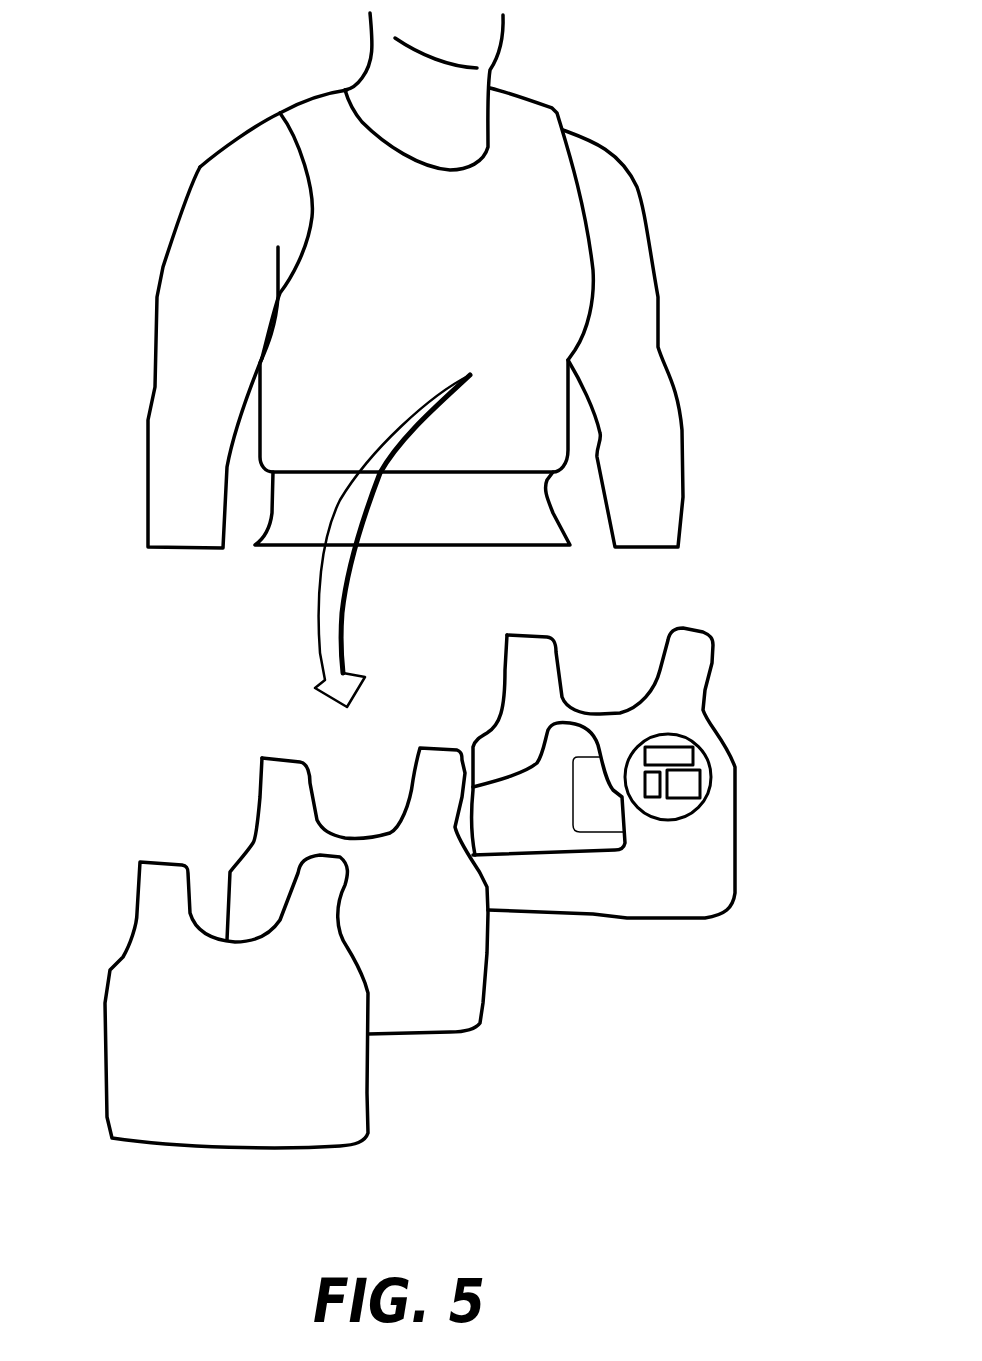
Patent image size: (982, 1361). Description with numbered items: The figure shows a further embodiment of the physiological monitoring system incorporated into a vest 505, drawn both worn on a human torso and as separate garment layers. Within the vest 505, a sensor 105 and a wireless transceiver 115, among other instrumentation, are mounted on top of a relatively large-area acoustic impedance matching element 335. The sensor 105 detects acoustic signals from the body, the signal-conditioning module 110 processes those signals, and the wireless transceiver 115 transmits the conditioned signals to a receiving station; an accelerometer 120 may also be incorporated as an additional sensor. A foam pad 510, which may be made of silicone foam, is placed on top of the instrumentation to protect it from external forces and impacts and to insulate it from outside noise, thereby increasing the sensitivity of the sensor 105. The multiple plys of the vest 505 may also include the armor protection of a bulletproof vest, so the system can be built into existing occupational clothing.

The vest 505 is at (520, 107).
The foam pad 510 is at (593, 747).
The acoustic impedance matching element 335 is at (690, 707).
The sensor 105 is at (687, 807).
The accelerometer 120 is at (693, 750).
The signal-conditioning module 110 is at (690, 787).
The wireless transceiver 115 is at (648, 797).